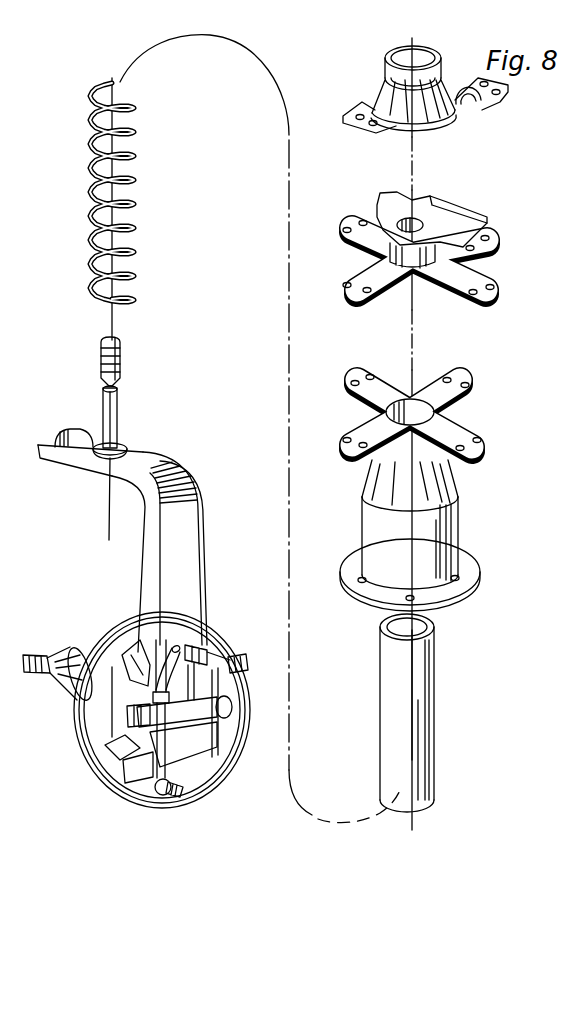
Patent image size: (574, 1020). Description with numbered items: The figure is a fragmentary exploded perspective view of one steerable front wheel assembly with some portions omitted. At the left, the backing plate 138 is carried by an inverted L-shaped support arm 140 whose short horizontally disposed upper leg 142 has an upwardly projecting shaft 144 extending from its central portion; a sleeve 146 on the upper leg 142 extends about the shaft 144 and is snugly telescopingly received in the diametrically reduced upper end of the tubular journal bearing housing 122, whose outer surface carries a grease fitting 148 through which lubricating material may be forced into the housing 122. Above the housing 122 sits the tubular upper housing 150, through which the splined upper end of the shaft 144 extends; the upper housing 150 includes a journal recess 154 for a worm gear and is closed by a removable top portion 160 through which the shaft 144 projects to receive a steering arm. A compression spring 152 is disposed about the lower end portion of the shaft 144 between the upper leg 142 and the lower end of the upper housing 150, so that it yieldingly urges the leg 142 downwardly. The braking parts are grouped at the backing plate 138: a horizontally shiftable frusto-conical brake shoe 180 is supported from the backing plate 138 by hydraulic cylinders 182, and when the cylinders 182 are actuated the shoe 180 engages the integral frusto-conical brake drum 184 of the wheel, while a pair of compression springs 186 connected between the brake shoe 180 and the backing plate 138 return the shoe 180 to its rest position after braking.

The tubular journal bearing housing 122 is at (464, 528).
The backing plate 138 is at (134, 660).
The L-shaped support arm 140 is at (146, 537).
The upper leg 142 is at (148, 462).
The shaft 144 is at (111, 420).
The sleeve 146 is at (430, 700).
The grease fitting 148 is at (457, 488).
The tubular upper housing 150 is at (463, 256).
The compression spring 152 is at (167, 222).
The journal recess 154 is at (427, 213).
The removable top portion 160 is at (428, 124).
The frusto-conical brake shoe 180 is at (123, 630).
The hydraulic cylinders 182 is at (207, 628).
The frusto-conical brake drum 184 is at (100, 638).
The compression springs 186 is at (230, 650).